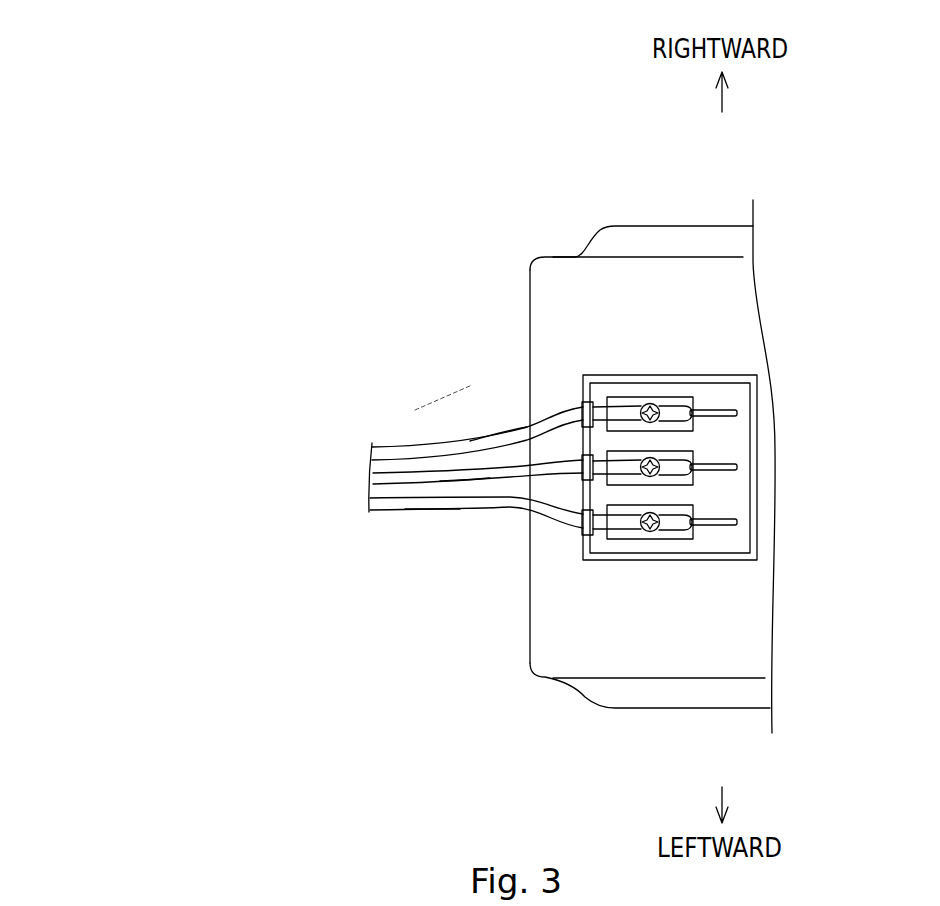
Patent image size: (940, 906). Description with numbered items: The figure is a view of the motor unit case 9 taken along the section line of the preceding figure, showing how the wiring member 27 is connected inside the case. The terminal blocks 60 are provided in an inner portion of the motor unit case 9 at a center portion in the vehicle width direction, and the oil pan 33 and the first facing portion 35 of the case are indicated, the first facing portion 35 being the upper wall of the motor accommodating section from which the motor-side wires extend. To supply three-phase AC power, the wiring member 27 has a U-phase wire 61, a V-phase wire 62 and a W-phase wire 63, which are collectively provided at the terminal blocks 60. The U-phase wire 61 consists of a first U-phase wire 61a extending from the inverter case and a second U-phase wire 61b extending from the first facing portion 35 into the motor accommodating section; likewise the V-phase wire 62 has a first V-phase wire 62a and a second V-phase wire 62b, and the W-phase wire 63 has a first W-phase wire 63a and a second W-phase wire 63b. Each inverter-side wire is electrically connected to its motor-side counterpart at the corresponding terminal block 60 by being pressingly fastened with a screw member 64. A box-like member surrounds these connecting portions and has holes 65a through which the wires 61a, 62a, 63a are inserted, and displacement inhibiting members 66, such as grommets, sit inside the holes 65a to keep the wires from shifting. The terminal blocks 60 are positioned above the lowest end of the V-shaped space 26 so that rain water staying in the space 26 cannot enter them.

The motor unit case 9 is at (540, 253).
The V-shaped space 26 is at (642, 333).
The wiring member 27 is at (190, 410).
The oil pan 33 is at (710, 287).
The first facing portion 35 is at (550, 657).
The terminal block 60 is at (693, 424).
The U-phase wire 61 is at (361, 453).
The V-phase wire 62 is at (361, 478).
The W-phase wire 63 is at (361, 505).
The first U-phase wire 61a is at (490, 438).
The first V-phase wire 62a is at (462, 482).
The first W-phase wire 63a is at (427, 508).
The second U-phase wire 61b is at (737, 412).
The second V-phase wire 62b is at (737, 468).
The second W-phase wire 63b is at (737, 523).
The screw member 64 is at (660, 404).
The hole 65a is at (580, 413).
The displacement inhibiting member 66 is at (565, 424).